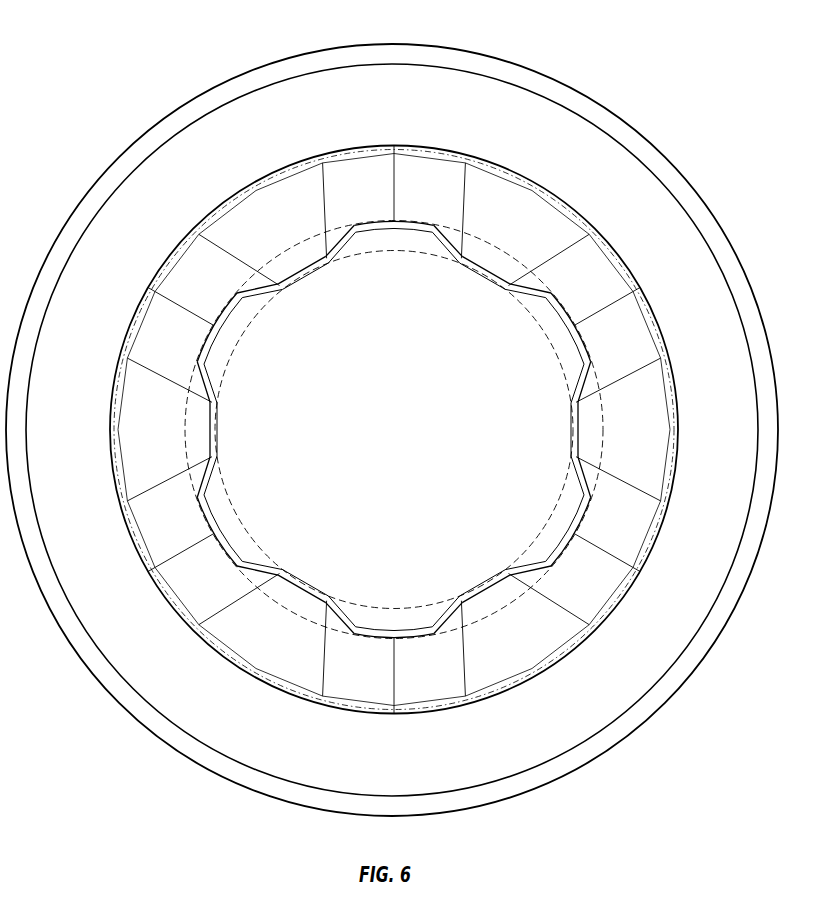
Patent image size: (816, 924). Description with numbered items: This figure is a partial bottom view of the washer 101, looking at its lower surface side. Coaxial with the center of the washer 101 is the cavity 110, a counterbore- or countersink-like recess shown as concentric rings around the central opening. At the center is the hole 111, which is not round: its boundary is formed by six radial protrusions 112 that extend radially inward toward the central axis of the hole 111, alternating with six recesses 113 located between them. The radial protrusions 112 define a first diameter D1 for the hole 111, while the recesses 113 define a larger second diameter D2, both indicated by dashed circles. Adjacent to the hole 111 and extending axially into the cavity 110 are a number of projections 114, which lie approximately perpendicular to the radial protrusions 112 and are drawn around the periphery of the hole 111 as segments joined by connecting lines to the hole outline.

The washer 101 is at (392, 423).
The cavity 110 is at (498, 110).
The hole 111 is at (413, 430).
The radial protrusion 112 is at (300, 278).
The recess 113 is at (368, 228).
The projection 114 is at (355, 198).
The first diameter D1 is at (223, 478).
The second diameter D2 is at (590, 412).